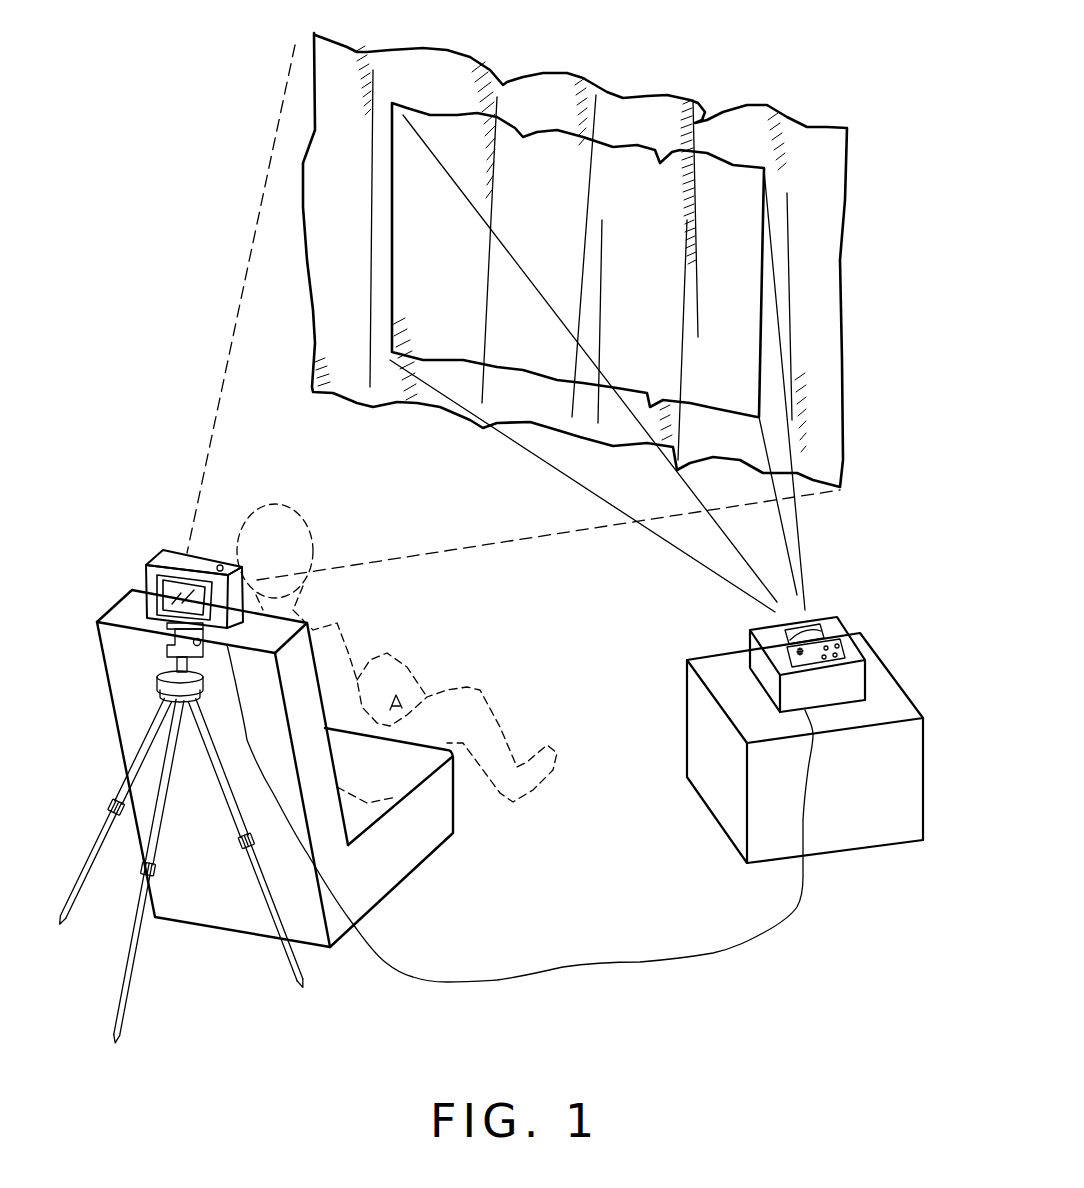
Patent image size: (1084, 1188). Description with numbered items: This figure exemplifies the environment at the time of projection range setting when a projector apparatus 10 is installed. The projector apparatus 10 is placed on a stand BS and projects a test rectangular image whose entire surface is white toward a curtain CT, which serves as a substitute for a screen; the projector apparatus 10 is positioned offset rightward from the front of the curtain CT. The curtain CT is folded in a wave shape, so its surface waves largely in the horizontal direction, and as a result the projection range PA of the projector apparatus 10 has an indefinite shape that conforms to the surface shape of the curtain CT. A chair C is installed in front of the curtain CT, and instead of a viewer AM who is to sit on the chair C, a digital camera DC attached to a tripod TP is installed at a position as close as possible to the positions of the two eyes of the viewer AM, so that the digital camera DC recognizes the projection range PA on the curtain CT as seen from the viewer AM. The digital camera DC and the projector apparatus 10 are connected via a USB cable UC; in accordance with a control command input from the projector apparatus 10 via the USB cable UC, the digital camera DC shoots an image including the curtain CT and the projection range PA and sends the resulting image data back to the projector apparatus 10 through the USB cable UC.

The curtain CT is at (822, 127).
The projection range PA is at (733, 163).
The digital camera DC is at (157, 553).
The tripod TP is at (166, 827).
The chair C is at (407, 853).
The viewer AM is at (337, 623).
The projector apparatus 10 is at (828, 615).
The stand BS is at (897, 673).
The USB cable UC is at (640, 962).